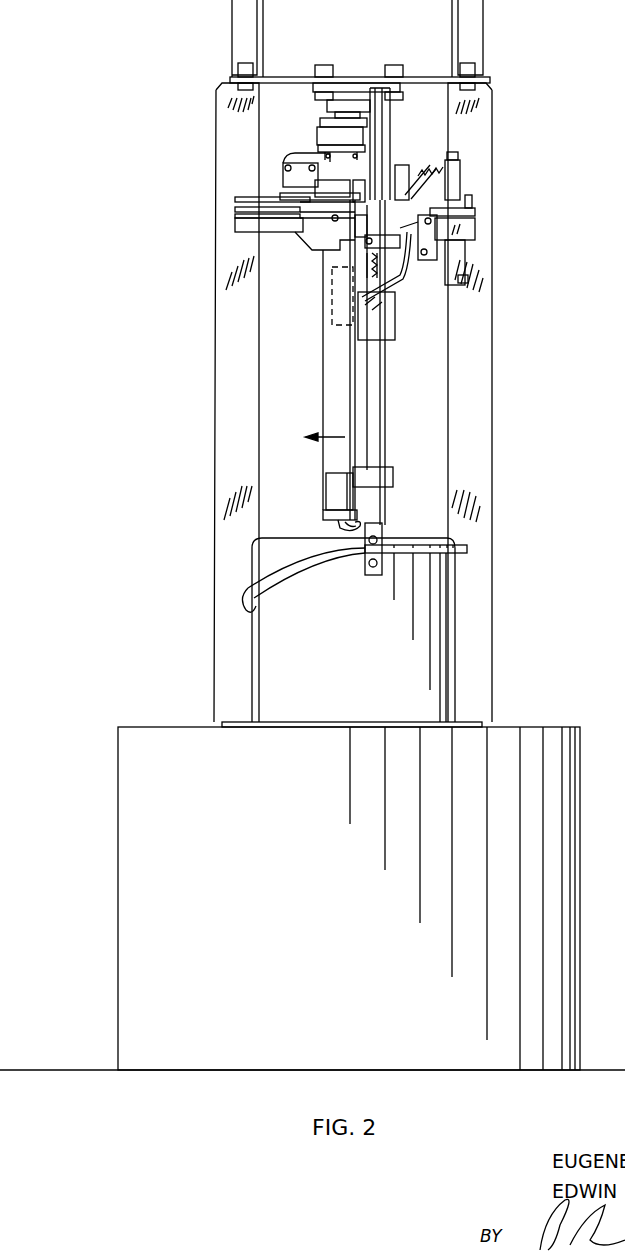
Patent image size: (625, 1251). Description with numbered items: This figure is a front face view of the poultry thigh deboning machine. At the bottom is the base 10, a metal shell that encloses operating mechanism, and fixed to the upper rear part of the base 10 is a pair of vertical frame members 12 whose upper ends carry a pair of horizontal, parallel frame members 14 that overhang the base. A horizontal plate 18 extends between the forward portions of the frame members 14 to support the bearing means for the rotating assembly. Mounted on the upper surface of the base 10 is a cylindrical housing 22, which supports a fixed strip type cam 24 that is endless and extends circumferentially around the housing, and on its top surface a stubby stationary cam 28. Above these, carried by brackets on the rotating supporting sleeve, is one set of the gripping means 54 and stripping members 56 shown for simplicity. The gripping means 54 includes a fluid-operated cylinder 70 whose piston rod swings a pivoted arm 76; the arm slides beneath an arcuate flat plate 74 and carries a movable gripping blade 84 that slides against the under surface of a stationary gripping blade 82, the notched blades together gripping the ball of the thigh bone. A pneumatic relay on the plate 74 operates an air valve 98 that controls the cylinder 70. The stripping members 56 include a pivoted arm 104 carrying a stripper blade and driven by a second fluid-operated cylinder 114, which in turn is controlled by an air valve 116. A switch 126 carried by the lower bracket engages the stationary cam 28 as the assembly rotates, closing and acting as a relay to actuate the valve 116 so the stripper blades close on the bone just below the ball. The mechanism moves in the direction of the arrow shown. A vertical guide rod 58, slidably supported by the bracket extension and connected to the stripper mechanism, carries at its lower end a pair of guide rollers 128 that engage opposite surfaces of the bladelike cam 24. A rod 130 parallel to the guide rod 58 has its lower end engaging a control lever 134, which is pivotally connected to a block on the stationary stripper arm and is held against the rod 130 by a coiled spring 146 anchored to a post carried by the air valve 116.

The base 10 is at (118, 842).
The vertical frame members 12 is at (228, 389).
The horizontal frame members 14 is at (232, 10).
The horizontal plate 18 is at (292, 79).
The cylindrical housing 22 is at (440, 636).
The strip type cam 24 is at (242, 598).
The stationary cam 28 is at (360, 546).
The gripping means 54 is at (232, 208).
The stripping members 56 is at (283, 248).
The vertical guide rod 58 is at (378, 383).
The fluid-operated cylinder 70 is at (408, 190).
The arcuate flat plate 74 is at (240, 200).
The pivoted arm 76 is at (265, 196).
The gripping blade 82 is at (332, 222).
The gripping blade 84 is at (240, 217).
The air valve 98 is at (287, 175).
The arm 104 is at (258, 235).
The fluid-operated cylinder 114 is at (440, 262).
The air valve 116 is at (470, 238).
The switch 126 is at (340, 497).
The guide rollers 128 is at (378, 542).
The rod 130 is at (362, 282).
The control lever 134 is at (402, 287).
The coiled spring 146 is at (438, 208).